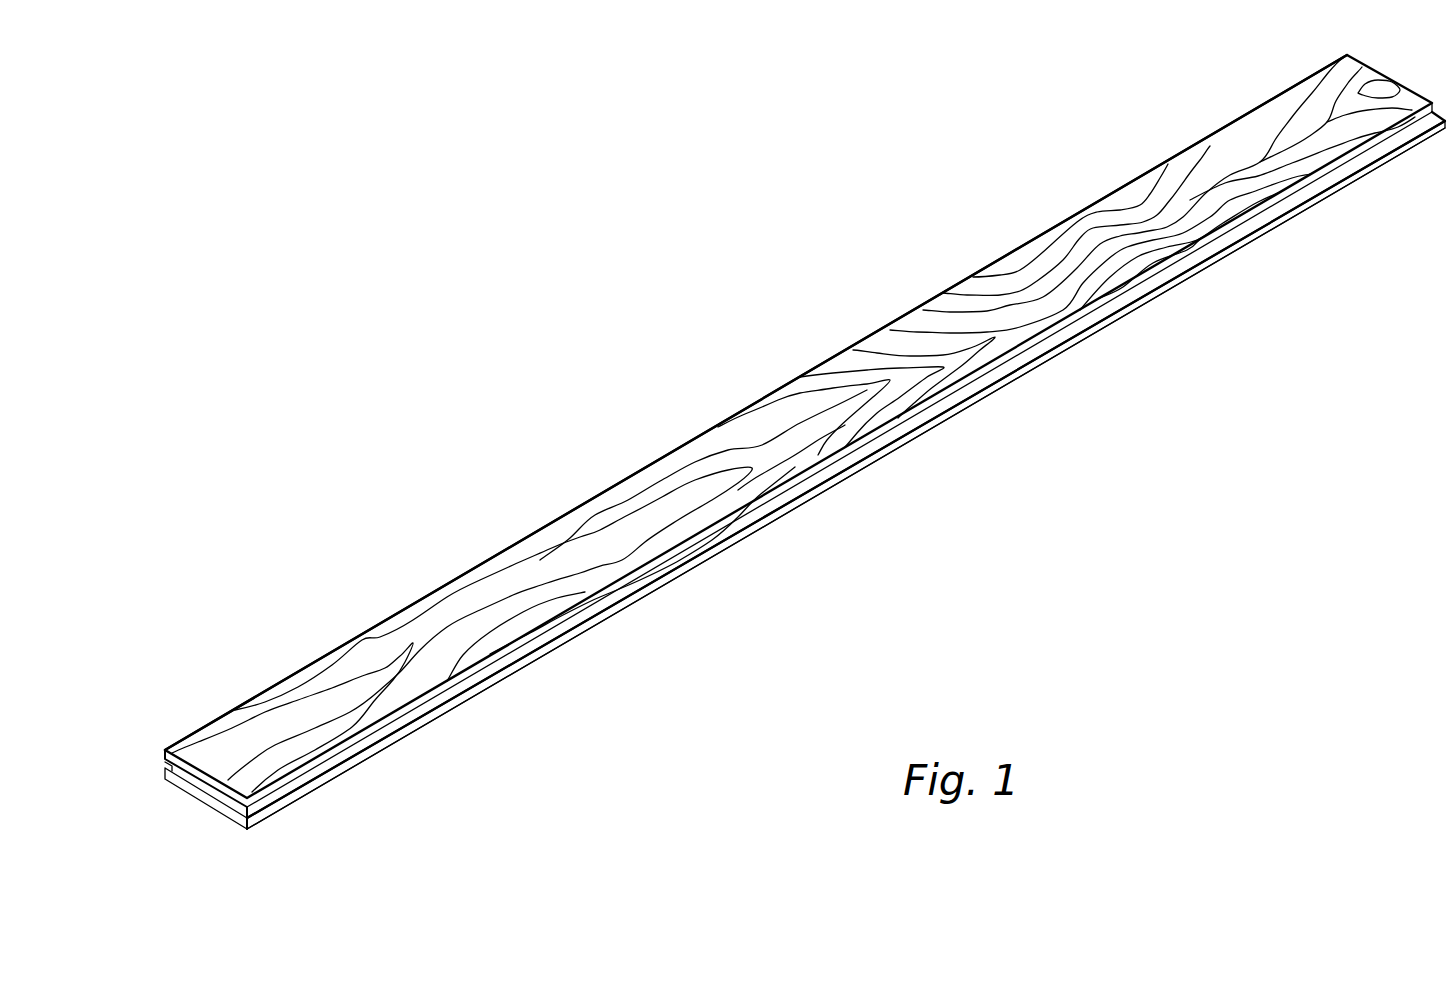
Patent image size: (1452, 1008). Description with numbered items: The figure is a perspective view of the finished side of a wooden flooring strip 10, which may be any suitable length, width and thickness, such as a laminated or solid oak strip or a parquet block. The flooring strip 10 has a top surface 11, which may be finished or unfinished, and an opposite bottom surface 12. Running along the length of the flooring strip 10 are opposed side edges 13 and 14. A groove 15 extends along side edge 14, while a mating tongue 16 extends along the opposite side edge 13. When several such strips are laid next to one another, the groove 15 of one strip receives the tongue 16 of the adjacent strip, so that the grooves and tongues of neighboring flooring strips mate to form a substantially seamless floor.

The flooring strip 10 is at (578, 318).
The top surface 11 is at (461, 605).
The bottom surface 12 is at (258, 829).
The side edge 13 is at (791, 508).
The side edge 14 is at (817, 372).
The groove 15 is at (167, 775).
The tongue 16 is at (303, 787).